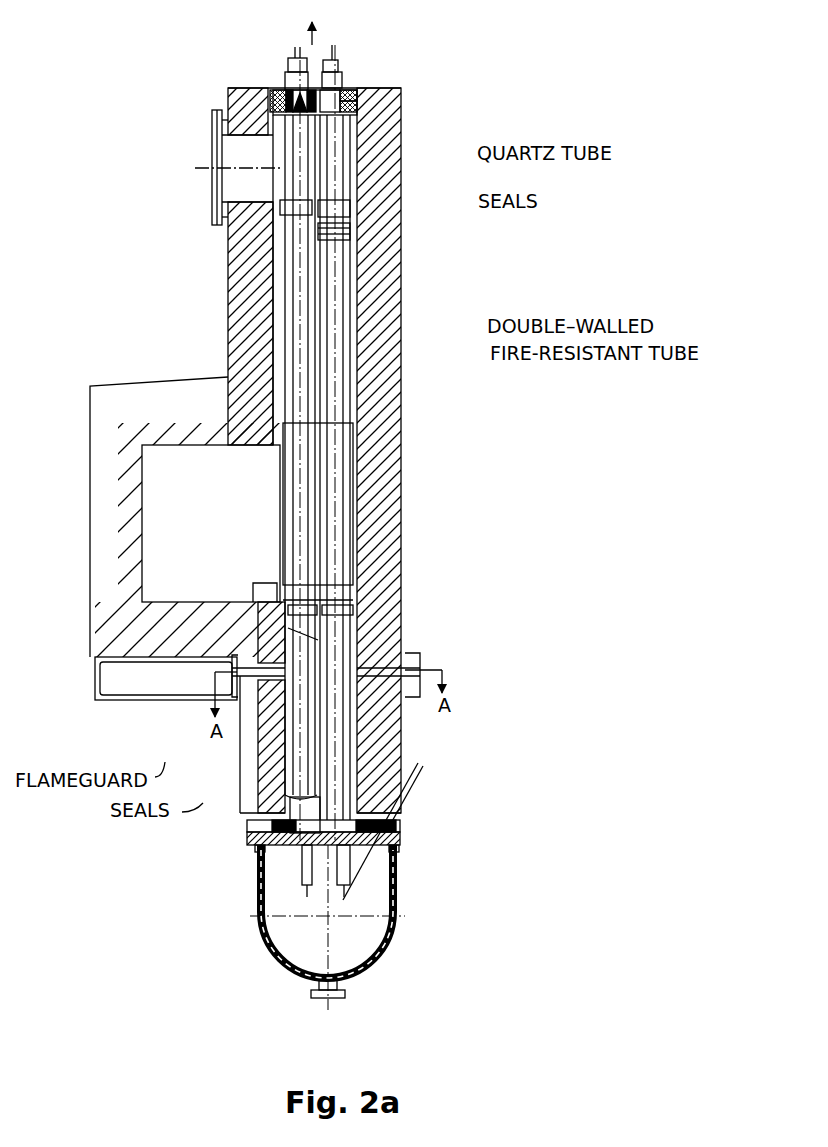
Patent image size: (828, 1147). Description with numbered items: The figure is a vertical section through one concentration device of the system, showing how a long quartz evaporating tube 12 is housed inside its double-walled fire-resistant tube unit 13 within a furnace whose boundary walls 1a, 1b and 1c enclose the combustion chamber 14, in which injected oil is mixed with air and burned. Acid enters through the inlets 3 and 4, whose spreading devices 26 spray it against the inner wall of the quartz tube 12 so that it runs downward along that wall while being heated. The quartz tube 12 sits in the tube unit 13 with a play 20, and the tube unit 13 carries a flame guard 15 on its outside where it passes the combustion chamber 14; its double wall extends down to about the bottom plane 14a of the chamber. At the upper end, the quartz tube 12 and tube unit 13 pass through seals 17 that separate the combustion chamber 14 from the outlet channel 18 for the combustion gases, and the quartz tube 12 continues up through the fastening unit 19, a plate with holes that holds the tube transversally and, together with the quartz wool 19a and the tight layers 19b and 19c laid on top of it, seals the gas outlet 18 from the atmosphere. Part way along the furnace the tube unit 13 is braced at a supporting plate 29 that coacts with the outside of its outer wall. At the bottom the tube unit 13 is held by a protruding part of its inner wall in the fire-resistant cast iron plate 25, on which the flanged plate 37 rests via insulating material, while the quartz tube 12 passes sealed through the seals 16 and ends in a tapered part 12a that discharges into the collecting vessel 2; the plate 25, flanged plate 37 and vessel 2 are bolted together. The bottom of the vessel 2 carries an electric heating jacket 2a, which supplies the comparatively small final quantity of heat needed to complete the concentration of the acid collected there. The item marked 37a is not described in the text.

The boundary wall 1a is at (401, 263).
The boundary wall 1b is at (253, 311).
The boundary wall 1c is at (107, 632).
The vessel 2 is at (397, 890).
The heating jacket 2a is at (390, 938).
The inlet 3 is at (347, 64).
The inlet 4 is at (293, 57).
The quartz evaporating tube 12 is at (333, 173).
The tapered part 12a is at (302, 863).
The tube unit 13 is at (340, 357).
The combustion chamber 14 is at (213, 568).
The bottom plane 14a is at (141, 602).
The flame guard 15 is at (283, 533).
The seals 16 is at (285, 822).
The seals 17 is at (364, 227).
The outlet channel 18 is at (255, 152).
The fastening unit 19 is at (357, 114).
The quartz wool 19a is at (362, 101).
The tight layer 19b is at (360, 99).
The tight layer 19c is at (356, 92).
The play 20 is at (349, 197).
The cast iron plate 25 is at (400, 848).
The spreading device 26 is at (300, 29).
The supporting plate 29 is at (370, 663).
The flanged plate 37 is at (250, 838).
The flange plate insert 37a is at (402, 836).